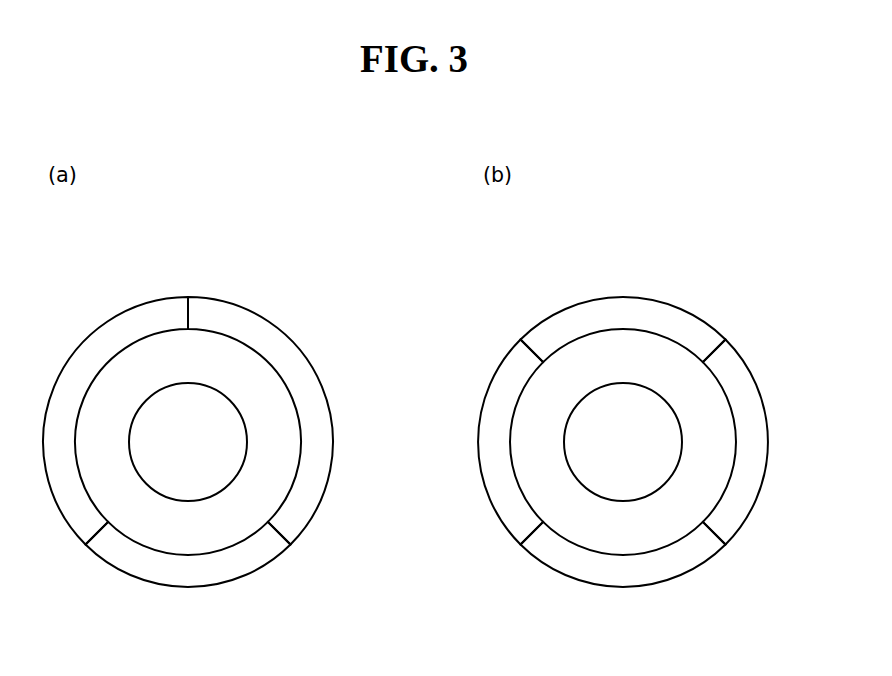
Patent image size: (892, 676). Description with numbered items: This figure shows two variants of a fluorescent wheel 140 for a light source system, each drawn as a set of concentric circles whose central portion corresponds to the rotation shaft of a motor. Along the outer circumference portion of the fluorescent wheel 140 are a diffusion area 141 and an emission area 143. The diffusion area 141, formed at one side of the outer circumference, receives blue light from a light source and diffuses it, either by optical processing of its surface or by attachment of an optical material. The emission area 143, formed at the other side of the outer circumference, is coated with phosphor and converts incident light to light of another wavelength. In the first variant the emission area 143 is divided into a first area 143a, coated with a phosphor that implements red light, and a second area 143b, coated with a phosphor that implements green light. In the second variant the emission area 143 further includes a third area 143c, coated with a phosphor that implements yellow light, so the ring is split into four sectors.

The fluorescent wheel 140 is at (105, 245).
The diffusion area 141 is at (188, 570).
The emission area 143 is at (298, 250).
The first area 143a is at (155, 315).
The second area 143b is at (238, 317).
The third area 143c is at (655, 320).